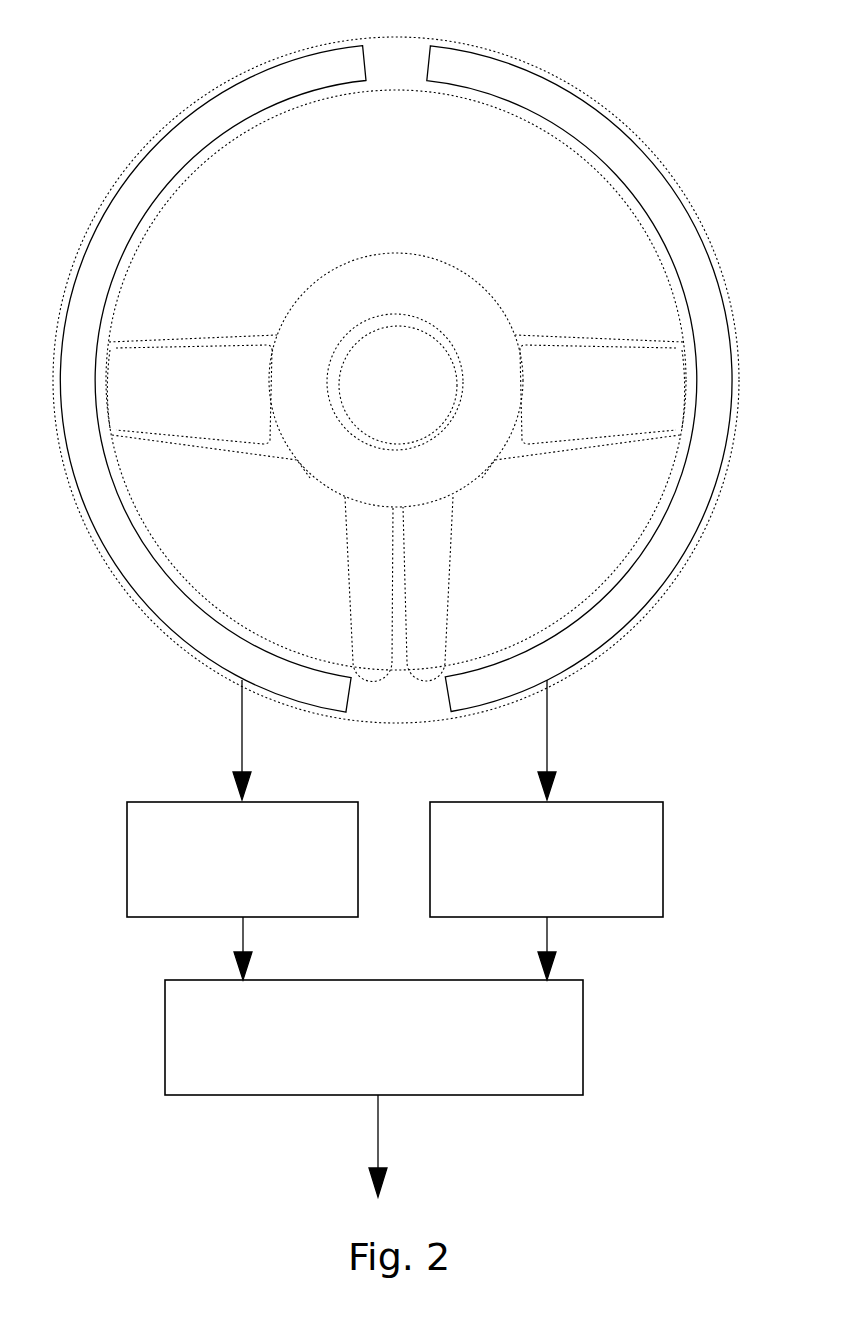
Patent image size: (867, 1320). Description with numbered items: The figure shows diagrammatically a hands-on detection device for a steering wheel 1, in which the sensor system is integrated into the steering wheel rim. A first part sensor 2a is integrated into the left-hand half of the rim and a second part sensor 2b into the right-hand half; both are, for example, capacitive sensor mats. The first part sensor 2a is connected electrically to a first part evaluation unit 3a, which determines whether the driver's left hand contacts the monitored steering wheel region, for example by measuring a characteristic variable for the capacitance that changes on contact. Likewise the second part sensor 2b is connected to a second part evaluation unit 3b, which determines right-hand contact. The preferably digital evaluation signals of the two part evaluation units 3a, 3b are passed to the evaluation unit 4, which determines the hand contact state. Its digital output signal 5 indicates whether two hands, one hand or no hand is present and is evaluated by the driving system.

The steering wheel 1 is at (590, 93).
The first part sensor 2a is at (302, 82).
The second part sensor 2b is at (653, 198).
The first part evaluation unit 3a is at (242, 859).
The second part evaluation unit 3b is at (546, 859).
The evaluation unit 4 is at (374, 1037).
The digital output signal 5 is at (380, 1157).